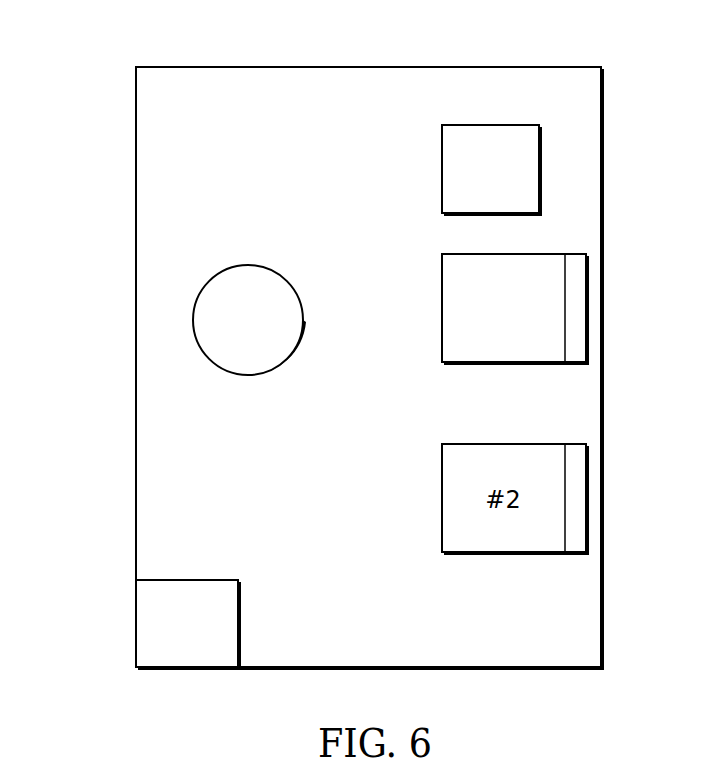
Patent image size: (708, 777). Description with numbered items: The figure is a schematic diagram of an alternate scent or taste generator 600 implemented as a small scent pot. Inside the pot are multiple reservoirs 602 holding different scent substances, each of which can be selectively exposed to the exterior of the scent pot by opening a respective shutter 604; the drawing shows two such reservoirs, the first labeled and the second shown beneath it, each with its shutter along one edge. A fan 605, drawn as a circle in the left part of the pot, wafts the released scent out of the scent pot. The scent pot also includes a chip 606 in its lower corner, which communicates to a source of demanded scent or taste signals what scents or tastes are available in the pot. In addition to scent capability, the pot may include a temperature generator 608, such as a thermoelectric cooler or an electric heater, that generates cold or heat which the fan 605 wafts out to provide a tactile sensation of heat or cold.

The scent or taste generator 600 is at (135, 50).
The reservoir 602 is at (442, 308).
The shutter 604 is at (572, 309).
The fan 605 is at (247, 265).
The chip 606 is at (188, 580).
The temperature generator 608 is at (442, 168).